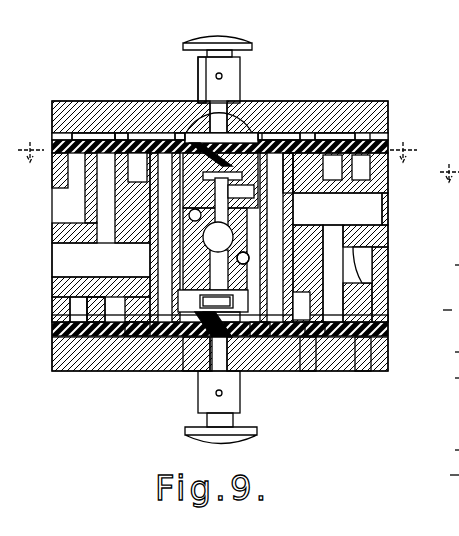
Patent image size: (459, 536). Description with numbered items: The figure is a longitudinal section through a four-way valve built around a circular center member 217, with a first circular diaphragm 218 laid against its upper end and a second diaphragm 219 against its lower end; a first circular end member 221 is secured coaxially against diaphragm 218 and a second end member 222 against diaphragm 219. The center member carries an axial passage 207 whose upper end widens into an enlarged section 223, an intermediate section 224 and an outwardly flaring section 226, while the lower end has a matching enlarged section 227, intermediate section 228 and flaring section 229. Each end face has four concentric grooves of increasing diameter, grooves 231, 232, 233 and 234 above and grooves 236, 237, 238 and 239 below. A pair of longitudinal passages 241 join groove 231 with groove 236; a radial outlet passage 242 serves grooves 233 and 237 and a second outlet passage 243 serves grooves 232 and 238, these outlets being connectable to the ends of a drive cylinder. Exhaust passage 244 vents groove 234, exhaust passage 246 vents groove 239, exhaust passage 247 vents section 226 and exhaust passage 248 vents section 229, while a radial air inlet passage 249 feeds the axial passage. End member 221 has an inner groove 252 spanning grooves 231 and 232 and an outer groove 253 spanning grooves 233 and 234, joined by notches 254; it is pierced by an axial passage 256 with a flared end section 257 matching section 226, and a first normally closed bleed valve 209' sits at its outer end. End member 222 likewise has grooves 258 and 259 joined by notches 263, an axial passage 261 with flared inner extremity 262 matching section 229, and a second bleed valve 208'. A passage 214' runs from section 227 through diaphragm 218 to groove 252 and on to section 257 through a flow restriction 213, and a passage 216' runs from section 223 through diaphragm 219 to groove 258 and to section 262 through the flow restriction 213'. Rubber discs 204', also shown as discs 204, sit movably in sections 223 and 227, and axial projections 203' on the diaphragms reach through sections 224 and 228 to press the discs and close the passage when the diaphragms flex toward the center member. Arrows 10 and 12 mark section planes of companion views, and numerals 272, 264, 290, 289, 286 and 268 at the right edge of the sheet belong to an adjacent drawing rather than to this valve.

The first normally closed bleed valve 209' is at (233, 35).
The axial passage 256 is at (206, 98).
The flared end section 257 is at (200, 130).
The axial projections 203' is at (220, 223).
The outwardly flaring final section 226 is at (240, 133).
The outer groove 253 is at (78, 132).
The first circular end member 221 is at (52, 118).
The first circular diaphragm 218 is at (55, 143).
The inner groove 252 is at (133, 134).
The flow restriction 213 is at (167, 124).
The intermediate-diameter section 224 is at (279, 124).
The notches 254 is at (337, 124).
The groove 234 is at (73, 174).
The exhaust passage 244 is at (57, 230).
The circular center member 217 is at (55, 241).
The radially directed outlet passage 242 is at (60, 276).
The groove 239 is at (55, 293).
The second diaphragm 219 is at (55, 325).
The second circular end member 222 is at (52, 350).
The groove 231 is at (157, 182).
The exhaust passage 247 is at (192, 194).
The longitudinal passages 241 is at (157, 224).
The groove 237 is at (101, 260).
The passage 214' is at (141, 237).
The axial passage 207 is at (216, 275).
The radially directed air inlet passage 249 is at (228, 244).
The enlarged-diameter section 223 is at (241, 191).
The discs 204 is at (219, 234).
The intermediate-diameter section 228 is at (213, 301).
The rubber discs 204' is at (216, 301).
The enlarged-diameter section 227 is at (243, 305).
The exhaust passage 248 is at (247, 272).
The passage 216' is at (282, 237).
The groove 232 is at (340, 182).
The groove 233 is at (365, 257).
The exhaust passage 246 is at (399, 266).
The outlet passage 243 is at (388, 196).
The axial passage 261 is at (240, 394).
The second normally closed bleed valve 208' is at (240, 435).
The flared inner extremity 262 is at (235, 342).
The groove 238 is at (110, 315).
The outwardly flaring final section 229 is at (200, 337).
The groove 236 is at (147, 342).
The flow restriction 213' is at (273, 343).
The notches 263 is at (315, 340).
The groove 258 is at (308, 342).
The groove 259 is at (363, 342).
The section line 10 is at (217, 163).
The section line 12 is at (449, 185).
The adjacent figure element 272 is at (447, 270).
The adjacent figure element 264 is at (437, 315).
The adjacent figure element 290 is at (441, 357).
The adjacent figure element 289 is at (439, 383).
The adjacent figure element 286 is at (441, 455).
The adjacent figure element 268 is at (438, 477).